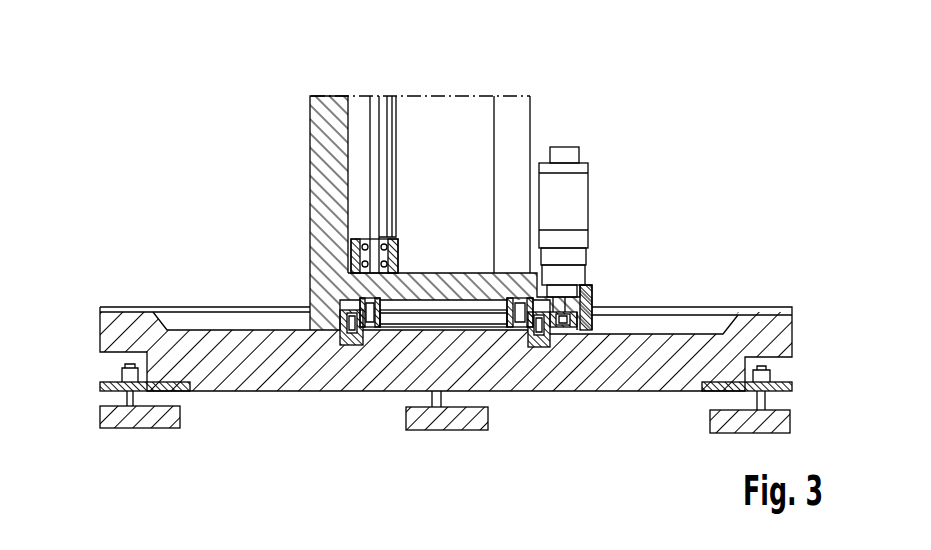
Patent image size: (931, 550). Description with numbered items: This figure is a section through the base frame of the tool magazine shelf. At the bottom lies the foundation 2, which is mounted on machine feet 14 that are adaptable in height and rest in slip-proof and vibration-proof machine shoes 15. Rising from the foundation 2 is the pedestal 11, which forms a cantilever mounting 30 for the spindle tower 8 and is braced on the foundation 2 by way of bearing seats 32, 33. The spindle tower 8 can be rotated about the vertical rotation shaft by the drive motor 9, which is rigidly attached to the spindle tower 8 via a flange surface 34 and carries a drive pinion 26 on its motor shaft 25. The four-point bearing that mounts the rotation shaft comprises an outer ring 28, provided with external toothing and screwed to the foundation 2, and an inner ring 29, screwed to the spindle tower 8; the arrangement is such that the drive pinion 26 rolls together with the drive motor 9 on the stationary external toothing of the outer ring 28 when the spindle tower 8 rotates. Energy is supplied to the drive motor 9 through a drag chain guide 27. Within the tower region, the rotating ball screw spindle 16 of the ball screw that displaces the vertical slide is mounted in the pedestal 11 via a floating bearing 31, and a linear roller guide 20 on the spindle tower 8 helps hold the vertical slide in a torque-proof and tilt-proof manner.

The foundation 2 is at (652, 372).
The spindle tower 8 is at (318, 152).
The drive motor 9 is at (577, 195).
The pedestal 11 is at (318, 263).
The machine feet 14 is at (178, 386).
The machine shoes 15 is at (137, 423).
The ball screw spindle 16 is at (375, 103).
The linear roller guide 20 is at (393, 165).
The motor shaft 25 is at (591, 290).
The drive pinion 26 is at (575, 330).
The drag chain guide 27 is at (513, 105).
The outer ring 28 is at (540, 348).
The inner ring 29 is at (492, 328).
The cantilever mounting 30 is at (373, 340).
The floating bearing 31 is at (398, 246).
The bearing seat 32 is at (365, 300).
The bearing seat 33 is at (346, 346).
The flange surface 34 is at (570, 287).